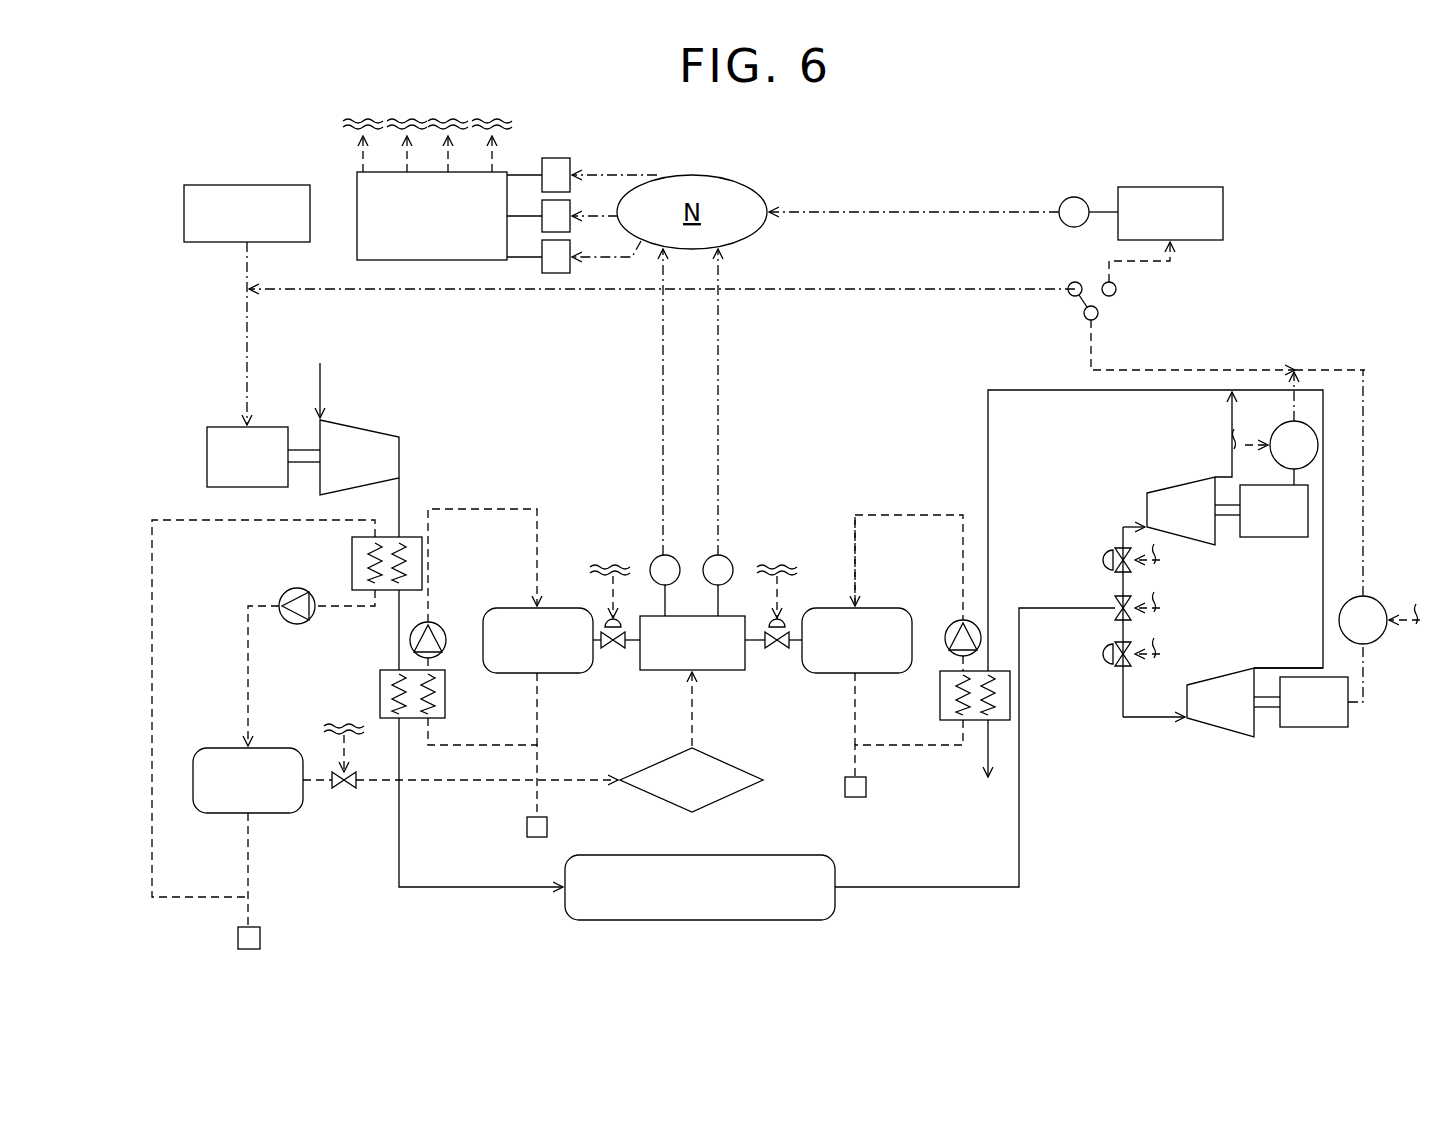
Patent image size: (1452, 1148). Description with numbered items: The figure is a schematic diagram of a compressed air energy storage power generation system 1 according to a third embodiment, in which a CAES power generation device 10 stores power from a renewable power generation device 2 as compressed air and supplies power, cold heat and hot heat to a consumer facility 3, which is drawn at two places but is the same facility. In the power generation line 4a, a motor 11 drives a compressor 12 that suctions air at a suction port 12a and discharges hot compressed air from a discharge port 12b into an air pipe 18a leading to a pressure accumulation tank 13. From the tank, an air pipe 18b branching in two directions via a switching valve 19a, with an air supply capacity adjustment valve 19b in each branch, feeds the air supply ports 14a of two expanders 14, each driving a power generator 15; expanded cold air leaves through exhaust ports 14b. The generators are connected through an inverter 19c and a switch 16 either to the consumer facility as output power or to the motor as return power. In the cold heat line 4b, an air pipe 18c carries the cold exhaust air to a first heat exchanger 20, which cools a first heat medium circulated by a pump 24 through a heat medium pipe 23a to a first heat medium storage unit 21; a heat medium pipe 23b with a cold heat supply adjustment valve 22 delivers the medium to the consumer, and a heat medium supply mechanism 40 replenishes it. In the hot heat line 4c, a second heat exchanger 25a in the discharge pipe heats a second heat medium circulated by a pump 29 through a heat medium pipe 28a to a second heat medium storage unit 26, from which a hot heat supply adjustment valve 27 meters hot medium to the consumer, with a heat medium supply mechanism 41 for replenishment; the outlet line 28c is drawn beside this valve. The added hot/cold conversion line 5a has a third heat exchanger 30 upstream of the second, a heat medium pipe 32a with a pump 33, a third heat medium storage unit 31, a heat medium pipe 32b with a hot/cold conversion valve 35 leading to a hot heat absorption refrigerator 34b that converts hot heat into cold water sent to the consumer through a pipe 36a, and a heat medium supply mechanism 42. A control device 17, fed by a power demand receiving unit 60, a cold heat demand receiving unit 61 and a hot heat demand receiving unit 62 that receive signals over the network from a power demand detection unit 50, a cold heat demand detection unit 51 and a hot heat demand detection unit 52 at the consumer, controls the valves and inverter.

The compressed air energy storage power generation system 1 is at (208, 325).
The power generation device 2 is at (243, 185).
The consumer facility 3 is at (1223, 189).
The power generation line 4a is at (1035, 860).
The cold heat line 4b is at (850, 502).
The hot heat line 4c is at (548, 554).
The hot/cold conversion line 5a is at (275, 851).
The CAES power generation device 10 is at (1187, 894).
The motor 11 is at (230, 424).
The compressor 12 is at (399, 467).
The suction port 12a is at (322, 418).
The discharge port 12b is at (402, 469).
The pressure accumulation tank 13 is at (725, 920).
The expander 14 is at (1170, 487).
The air supply port 14a is at (1147, 525).
The exhaust port 14b is at (1218, 477).
The power generator 15 is at (1274, 537).
The switch 16 is at (1116, 307).
The control device 17 is at (357, 172).
The air pipe 18a is at (427, 888).
The air pipe 18b is at (1019, 887).
The air pipe 18c is at (988, 416).
The switching valve 19a is at (1130, 606).
The air supply capacity adjustment valve 19b is at (1103, 560).
The inverter 19c is at (1272, 444).
The first heat exchanger 20 is at (940, 709).
The first heat medium storage unit 21 is at (833, 605).
The cold heat supply adjustment valve 22 is at (783, 655).
The heat medium pipe 23a is at (898, 515).
The heat medium pipe 23b is at (754, 655).
The pump 24 is at (951, 634).
The second heat exchanger 25a is at (445, 696).
The second heat medium storage unit 26 is at (515, 606).
The hot heat supply adjustment valve 27 is at (600, 658).
The heat medium pipe 28a is at (512, 509).
The heat supply line 28c is at (630, 658).
The pump 29 is at (440, 626).
The third heat exchanger 30 is at (352, 569).
The third heat medium storage unit 31 is at (240, 748).
The heat medium pipe 32a is at (155, 678).
The heat medium pipe 32b is at (446, 785).
The pump 33 is at (280, 602).
The hot heat absorption refrigerator 34b is at (650, 798).
The hot/cold conversion valve 35 is at (348, 790).
The pipe 36a is at (708, 745).
The heat medium supply mechanism 40 is at (850, 797).
The heat medium supply mechanism 41 is at (523, 837).
The heat medium supply mechanism 42 is at (238, 940).
The power demand detection unit 50 is at (1064, 202).
The cold heat demand detection unit 51 is at (720, 555).
The hot heat demand detection unit 52 is at (660, 555).
The power demand receiving unit 60 is at (570, 160).
The cold heat demand receiving unit 61 is at (574, 201).
The hot heat demand receiving unit 62 is at (572, 246).